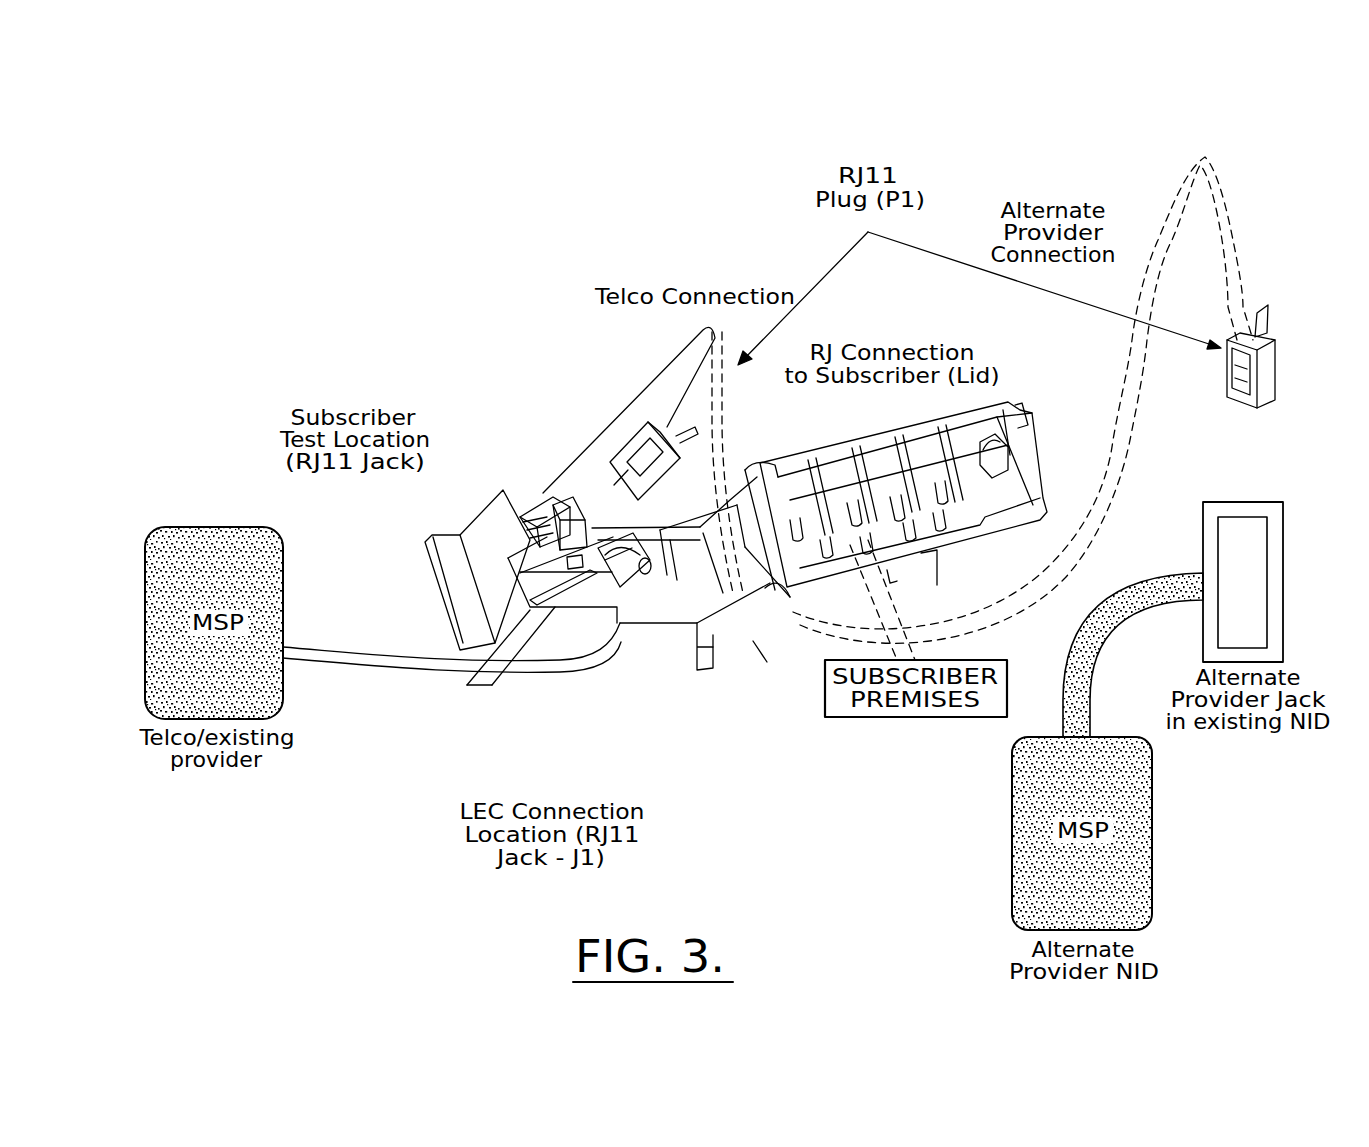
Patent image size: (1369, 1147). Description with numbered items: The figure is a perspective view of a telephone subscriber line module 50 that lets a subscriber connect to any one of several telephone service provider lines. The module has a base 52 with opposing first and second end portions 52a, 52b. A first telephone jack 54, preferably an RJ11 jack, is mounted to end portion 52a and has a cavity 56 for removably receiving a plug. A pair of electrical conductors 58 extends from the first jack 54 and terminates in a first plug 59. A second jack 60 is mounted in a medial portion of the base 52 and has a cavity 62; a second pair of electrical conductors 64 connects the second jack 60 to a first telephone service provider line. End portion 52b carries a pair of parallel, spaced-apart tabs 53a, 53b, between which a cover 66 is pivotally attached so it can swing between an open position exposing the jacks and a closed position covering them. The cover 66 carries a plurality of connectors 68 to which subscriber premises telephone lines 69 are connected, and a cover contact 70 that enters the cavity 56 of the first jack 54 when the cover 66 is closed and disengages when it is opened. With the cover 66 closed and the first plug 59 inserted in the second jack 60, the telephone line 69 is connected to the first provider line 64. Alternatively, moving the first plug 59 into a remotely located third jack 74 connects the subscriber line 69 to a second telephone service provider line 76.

The telephone subscriber line module 50 is at (558, 706).
The base 52 is at (628, 604).
The first end portion 52a is at (465, 568).
The second end portion 52b is at (750, 680).
The tab 53a is at (768, 509).
The tab 53b is at (815, 605).
The first telephone jack 54 is at (518, 503).
The cavity 56 is at (589, 523).
The pair of electrical conductors 58 is at (568, 442).
The first plug 59 is at (657, 461).
The second jack 60 is at (589, 694).
The cavity 62 is at (654, 568).
The second pair of electrical conductors 64 is at (452, 669).
The cover 66 is at (1028, 393).
The connector 68 is at (930, 462).
The telephone line 69 is at (910, 608).
The cover contact 70 is at (1030, 449).
The third jack 74 is at (1239, 555).
The second telephone service provider line 76 is at (1133, 655).